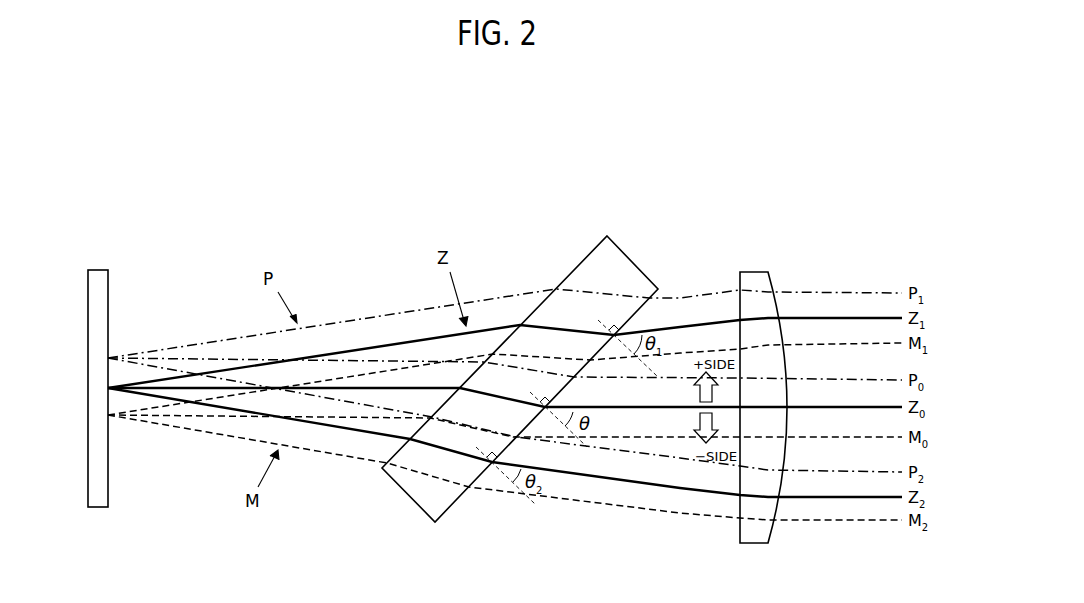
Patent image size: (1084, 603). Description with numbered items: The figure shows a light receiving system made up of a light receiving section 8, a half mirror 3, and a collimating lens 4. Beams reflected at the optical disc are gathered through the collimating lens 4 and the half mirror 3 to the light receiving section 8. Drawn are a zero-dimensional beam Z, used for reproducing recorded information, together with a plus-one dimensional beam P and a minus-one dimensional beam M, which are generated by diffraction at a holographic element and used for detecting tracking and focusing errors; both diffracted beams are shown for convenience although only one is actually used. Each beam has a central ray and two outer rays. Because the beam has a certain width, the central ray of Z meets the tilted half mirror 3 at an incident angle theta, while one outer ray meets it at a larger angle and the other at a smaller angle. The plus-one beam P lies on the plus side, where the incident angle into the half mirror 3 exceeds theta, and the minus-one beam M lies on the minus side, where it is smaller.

The half mirror 3 is at (587, 257).
The collimating lens 4 is at (756, 272).
The light receiving section 8 is at (108, 302).